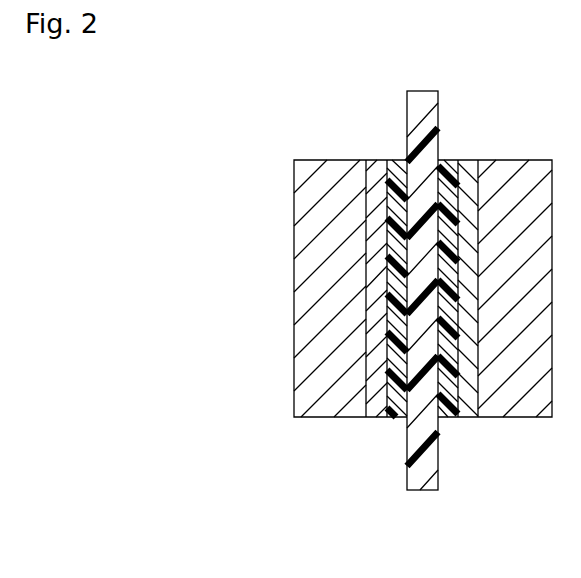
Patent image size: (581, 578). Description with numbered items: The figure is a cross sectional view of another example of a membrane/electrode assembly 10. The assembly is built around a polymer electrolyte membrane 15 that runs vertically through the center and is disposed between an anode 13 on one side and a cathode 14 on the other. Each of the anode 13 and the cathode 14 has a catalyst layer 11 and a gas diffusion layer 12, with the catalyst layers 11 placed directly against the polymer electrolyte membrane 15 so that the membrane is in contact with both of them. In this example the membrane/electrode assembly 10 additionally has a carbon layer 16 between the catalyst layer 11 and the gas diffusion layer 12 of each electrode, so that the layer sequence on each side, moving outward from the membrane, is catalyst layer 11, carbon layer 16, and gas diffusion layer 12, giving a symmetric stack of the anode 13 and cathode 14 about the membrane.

The membrane/electrode assembly 10 is at (484, 119).
The catalyst layer 11 is at (397, 418).
The gas diffusion layer 12 is at (315, 418).
The anode 13 is at (300, 470).
The cathode 14 is at (443, 470).
The polymer electrolyte membrane 15 is at (422, 483).
The carbon layer 16 is at (374, 418).